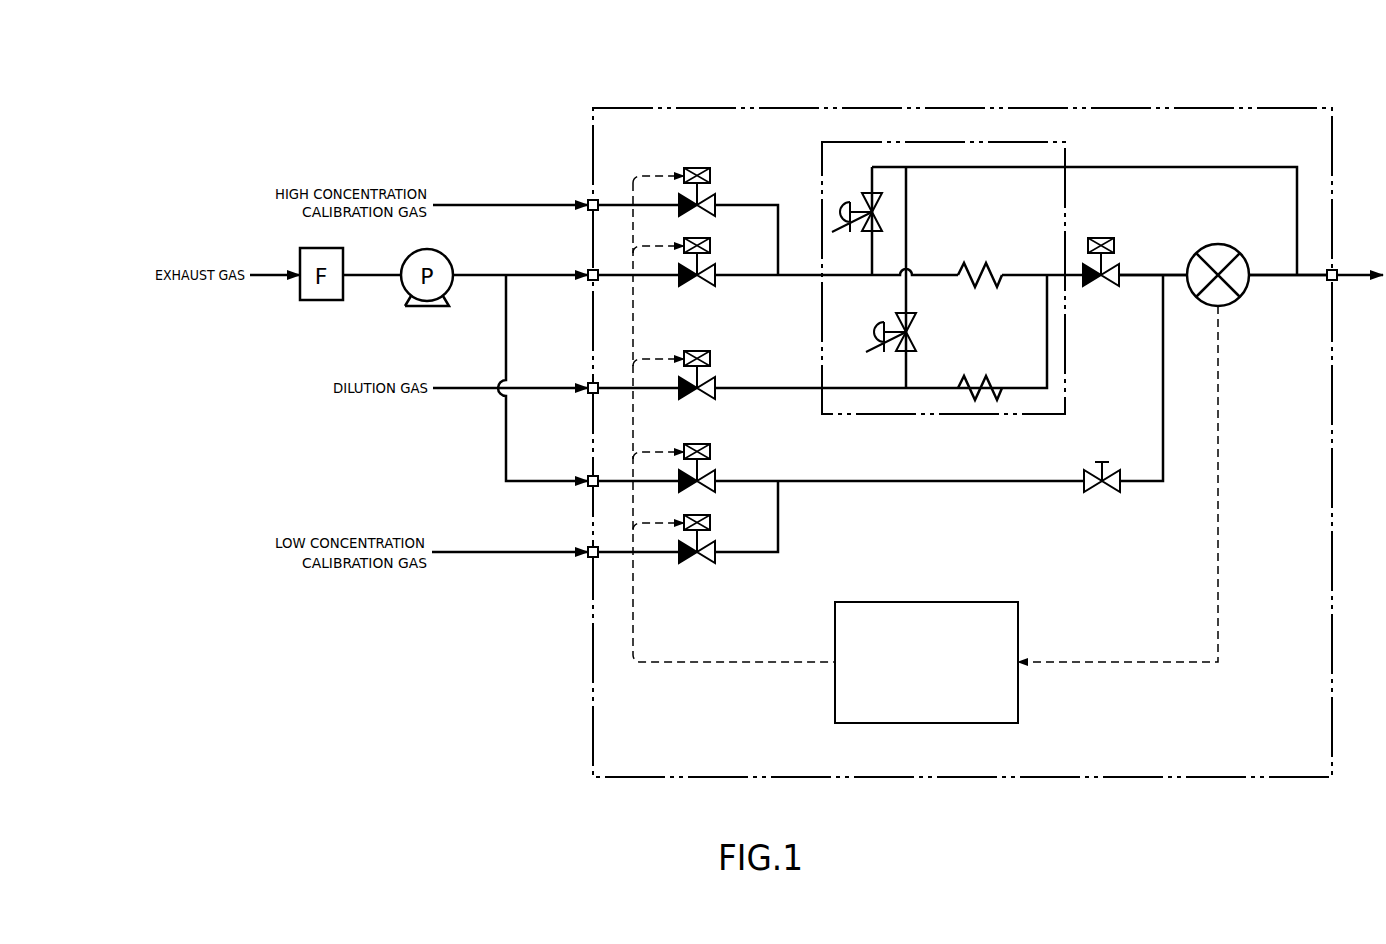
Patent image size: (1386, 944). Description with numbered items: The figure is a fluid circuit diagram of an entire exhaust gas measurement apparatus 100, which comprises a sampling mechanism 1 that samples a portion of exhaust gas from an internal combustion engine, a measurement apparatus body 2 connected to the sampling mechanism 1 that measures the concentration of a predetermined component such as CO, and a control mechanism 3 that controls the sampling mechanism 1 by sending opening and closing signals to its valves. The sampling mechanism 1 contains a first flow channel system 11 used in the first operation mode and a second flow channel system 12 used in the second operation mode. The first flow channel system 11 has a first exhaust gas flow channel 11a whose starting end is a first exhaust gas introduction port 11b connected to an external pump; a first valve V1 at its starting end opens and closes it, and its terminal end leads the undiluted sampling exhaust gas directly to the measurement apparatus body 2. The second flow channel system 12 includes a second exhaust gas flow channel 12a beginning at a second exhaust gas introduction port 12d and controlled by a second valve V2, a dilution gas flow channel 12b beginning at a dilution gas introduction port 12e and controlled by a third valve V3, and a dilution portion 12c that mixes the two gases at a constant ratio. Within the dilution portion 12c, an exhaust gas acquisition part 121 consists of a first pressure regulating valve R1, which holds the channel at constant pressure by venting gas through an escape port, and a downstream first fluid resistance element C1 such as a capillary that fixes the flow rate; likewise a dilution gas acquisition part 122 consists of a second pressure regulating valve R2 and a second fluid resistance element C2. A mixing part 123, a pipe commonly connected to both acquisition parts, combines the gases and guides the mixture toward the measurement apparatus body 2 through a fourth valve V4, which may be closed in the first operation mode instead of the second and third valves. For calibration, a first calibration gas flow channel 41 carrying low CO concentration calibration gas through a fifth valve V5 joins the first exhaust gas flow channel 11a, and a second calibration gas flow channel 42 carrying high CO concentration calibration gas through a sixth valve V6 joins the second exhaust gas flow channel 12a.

The exhaust gas measurement apparatus 100 is at (1022, 100).
The sampling mechanism 1 is at (843, 133).
The measurement apparatus body 2 is at (1244, 294).
The control mechanism 3 is at (928, 602).
The first flow channel system 11 is at (860, 488).
The first exhaust gas flow channel 11a is at (922, 484).
The first exhaust gas introduction port 11b is at (588, 477).
The second flow channel system 12 is at (757, 284).
The second exhaust gas flow channel 12a is at (803, 278).
The dilution gas flow channel 12b is at (780, 391).
The dilution portion 12c is at (1066, 369).
The second exhaust gas introduction port 12d is at (588, 270).
The dilution gas introduction port 12e is at (588, 384).
The first calibration gas flow channel 41 is at (776, 558).
The second calibration gas flow channel 42 is at (778, 202).
The exhaust gas acquisition part 121 is at (917, 231).
The dilution gas acquisition part 122 is at (939, 346).
The mixing part 123 is at (1058, 294).
The first valve V1 is at (688, 438).
The second valve V2 is at (712, 240).
The third valve V3 is at (688, 346).
The fourth valve V4 is at (1100, 240).
The fifth valve V5 is at (706, 566).
The sixth valve V6 is at (712, 170).
The first pressure regulating valve R1 is at (882, 212).
The second pressure regulating valve R2 is at (912, 332).
The first fluid resistance element C1 is at (980, 253).
The second fluid resistance element C2 is at (990, 384).